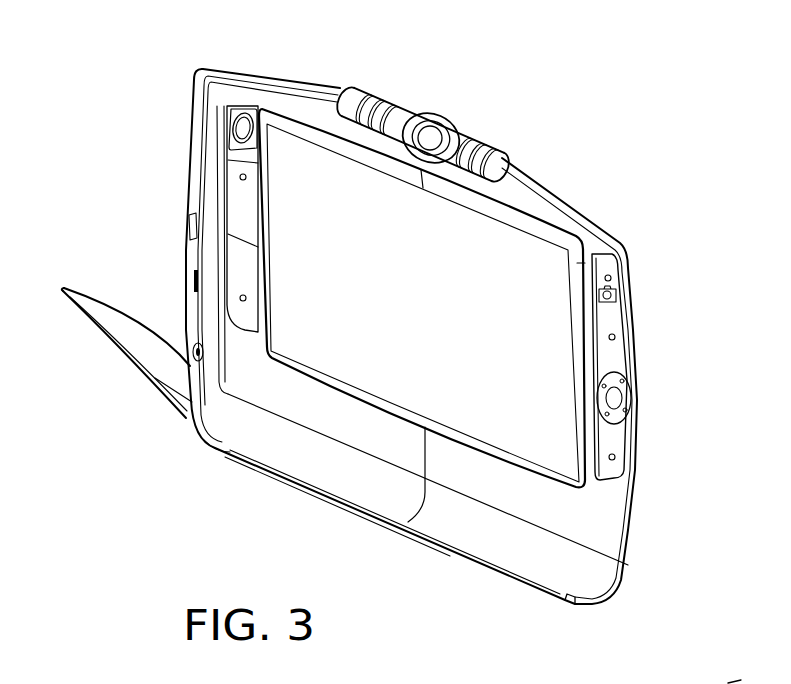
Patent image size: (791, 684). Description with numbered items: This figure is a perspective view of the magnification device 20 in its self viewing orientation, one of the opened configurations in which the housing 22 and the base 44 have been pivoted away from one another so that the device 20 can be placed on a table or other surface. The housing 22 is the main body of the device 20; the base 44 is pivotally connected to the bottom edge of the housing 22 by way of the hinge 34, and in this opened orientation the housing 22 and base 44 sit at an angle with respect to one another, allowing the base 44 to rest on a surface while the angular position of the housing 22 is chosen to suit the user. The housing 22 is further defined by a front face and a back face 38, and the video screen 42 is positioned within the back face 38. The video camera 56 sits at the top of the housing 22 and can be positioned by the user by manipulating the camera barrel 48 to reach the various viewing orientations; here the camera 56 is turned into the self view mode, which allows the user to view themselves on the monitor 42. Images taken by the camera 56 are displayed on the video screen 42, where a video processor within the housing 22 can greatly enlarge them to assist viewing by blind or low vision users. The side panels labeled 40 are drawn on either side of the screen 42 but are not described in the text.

The magnification device 20 is at (612, 145).
The housing 22 is at (613, 530).
The hinge 34 is at (571, 598).
The back face 38 is at (617, 493).
The control panel 40 is at (243, 257).
The video screen 42 is at (432, 308).
The base 44 is at (120, 356).
The camera barrel 48 is at (358, 100).
The video camera 56 is at (431, 139).